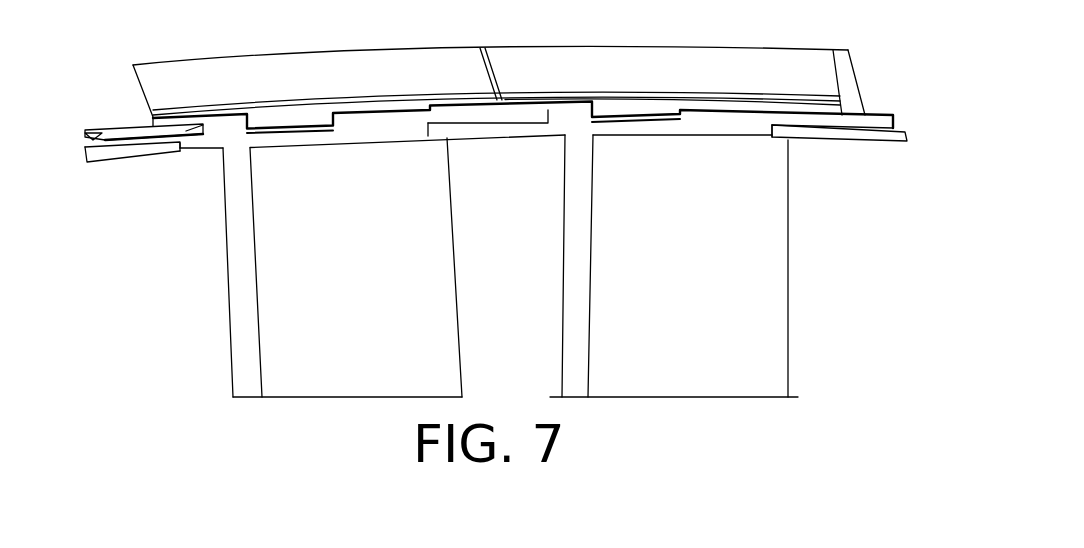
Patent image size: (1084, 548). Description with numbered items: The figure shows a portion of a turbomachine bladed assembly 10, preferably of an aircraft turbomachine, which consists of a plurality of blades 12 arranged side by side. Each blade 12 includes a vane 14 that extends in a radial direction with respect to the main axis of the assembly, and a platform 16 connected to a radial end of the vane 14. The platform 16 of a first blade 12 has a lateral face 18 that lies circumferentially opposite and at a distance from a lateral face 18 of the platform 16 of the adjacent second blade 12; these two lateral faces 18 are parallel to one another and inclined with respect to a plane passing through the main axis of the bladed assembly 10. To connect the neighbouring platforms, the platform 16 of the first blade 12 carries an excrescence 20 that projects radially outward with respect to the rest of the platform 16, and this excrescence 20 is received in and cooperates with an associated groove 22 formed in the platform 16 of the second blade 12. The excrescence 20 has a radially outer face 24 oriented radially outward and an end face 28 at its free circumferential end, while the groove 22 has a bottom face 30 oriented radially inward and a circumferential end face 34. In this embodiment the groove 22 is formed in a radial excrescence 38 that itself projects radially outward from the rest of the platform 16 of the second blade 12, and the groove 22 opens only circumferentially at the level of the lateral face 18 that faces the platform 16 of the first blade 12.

The turbomachine bladed assembly 10 is at (882, 350).
The blade 12 is at (143, 230).
The vane 14 is at (228, 358).
The platform 16 is at (282, 122).
The lateral face 18 is at (79, 165).
The excrescence 20 is at (385, 108).
The groove 22 is at (75, 139).
The radially outer face 24 is at (795, 100).
The end face 28 is at (905, 128).
The bottom face 30 is at (98, 128).
The circumferential end face 34 is at (183, 145).
The radial excrescence 38 is at (230, 106).